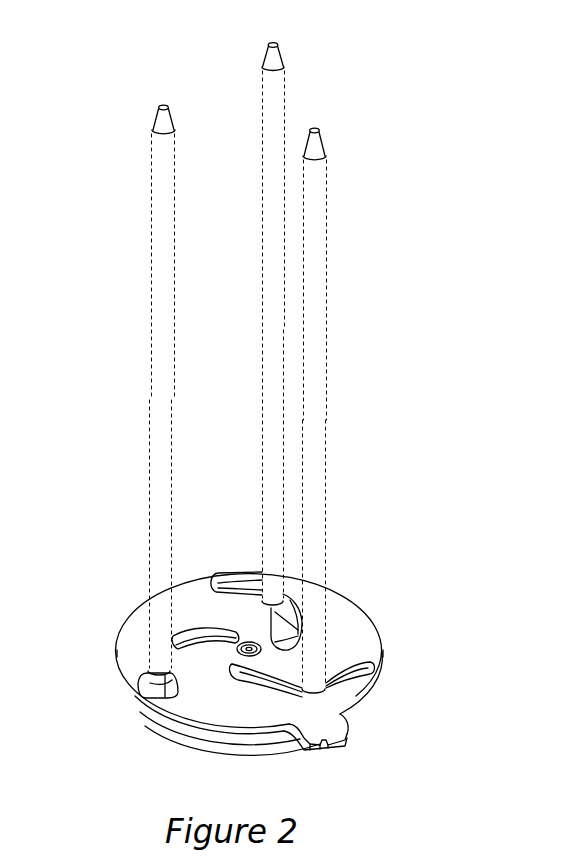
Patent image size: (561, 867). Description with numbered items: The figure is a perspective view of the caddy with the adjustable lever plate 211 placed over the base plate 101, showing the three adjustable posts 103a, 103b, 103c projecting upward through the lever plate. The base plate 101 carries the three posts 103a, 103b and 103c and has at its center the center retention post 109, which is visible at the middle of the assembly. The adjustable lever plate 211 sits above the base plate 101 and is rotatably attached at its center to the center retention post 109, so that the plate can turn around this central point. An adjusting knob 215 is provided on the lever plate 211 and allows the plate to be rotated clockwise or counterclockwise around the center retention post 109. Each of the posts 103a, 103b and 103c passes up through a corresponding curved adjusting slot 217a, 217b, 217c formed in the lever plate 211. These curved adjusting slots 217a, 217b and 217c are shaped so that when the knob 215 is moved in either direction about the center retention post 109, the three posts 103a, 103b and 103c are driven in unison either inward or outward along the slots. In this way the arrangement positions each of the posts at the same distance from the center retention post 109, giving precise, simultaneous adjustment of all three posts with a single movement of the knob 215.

The base plate 101 is at (258, 750).
The adjustable post 103a is at (310, 183).
The adjustable post 103b is at (277, 95).
The adjustable post 103c is at (167, 165).
The center retention post 109 is at (247, 642).
The adjustable lever plate 211 is at (357, 605).
The adjusting knob 215 is at (360, 719).
The curved adjusting slot 217a is at (371, 667).
The curved adjusting slot 217b is at (222, 584).
The curved adjusting slot 217c is at (125, 687).